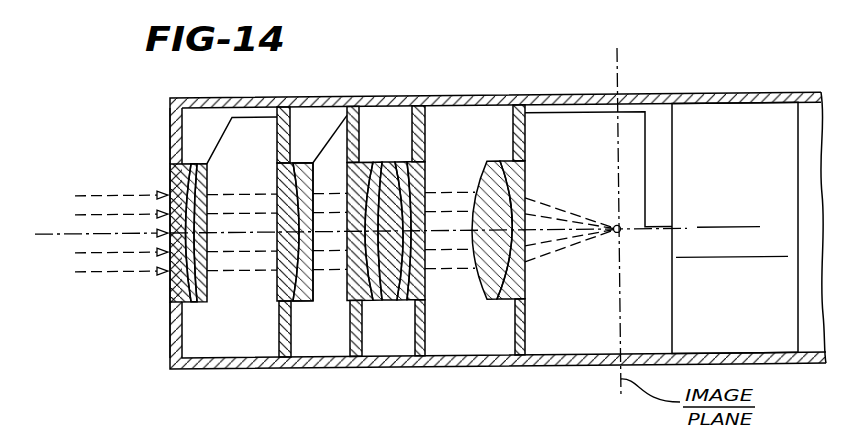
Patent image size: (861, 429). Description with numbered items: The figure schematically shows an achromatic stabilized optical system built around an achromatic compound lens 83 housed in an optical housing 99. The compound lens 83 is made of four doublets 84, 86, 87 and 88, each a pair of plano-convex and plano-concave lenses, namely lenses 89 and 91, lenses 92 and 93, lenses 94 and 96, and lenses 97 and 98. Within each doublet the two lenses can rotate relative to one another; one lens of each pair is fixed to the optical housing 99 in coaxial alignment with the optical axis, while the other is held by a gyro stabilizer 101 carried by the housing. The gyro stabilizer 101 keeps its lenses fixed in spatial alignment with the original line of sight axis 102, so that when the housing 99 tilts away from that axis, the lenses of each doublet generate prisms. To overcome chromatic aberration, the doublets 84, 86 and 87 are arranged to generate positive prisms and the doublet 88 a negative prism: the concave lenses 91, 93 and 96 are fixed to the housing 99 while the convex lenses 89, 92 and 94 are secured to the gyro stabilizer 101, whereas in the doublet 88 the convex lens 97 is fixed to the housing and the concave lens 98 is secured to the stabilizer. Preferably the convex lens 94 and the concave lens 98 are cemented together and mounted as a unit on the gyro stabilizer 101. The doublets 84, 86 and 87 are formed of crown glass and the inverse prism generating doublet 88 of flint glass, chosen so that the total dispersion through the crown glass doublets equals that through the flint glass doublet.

The achromatic compound lens 83 is at (393, 143).
The first doublet 84 is at (202, 310).
The second doublet 86 is at (297, 310).
The third doublet 87 is at (372, 310).
The fourth doublet 88 is at (395, 310).
The convex lens 89 is at (203, 291).
The concave lens 91 is at (173, 296).
The convex lens 92 is at (316, 292).
The concave lens 93 is at (283, 293).
The convex lens 94 is at (379, 282).
The concave lens 96 is at (357, 165).
The convex lens 97 is at (420, 283).
The concave lens 98 is at (402, 168).
The optical housing 99 is at (549, 98).
The gyro stabilizer 101 is at (722, 144).
The line of sight axis 102 is at (62, 200).